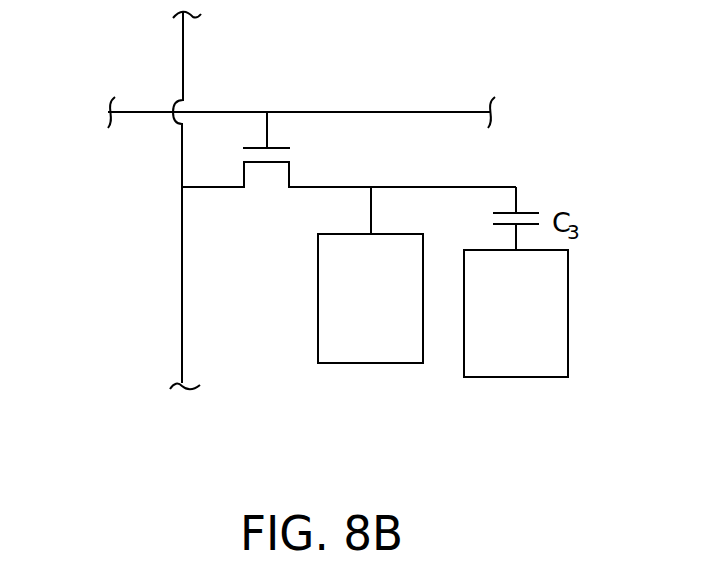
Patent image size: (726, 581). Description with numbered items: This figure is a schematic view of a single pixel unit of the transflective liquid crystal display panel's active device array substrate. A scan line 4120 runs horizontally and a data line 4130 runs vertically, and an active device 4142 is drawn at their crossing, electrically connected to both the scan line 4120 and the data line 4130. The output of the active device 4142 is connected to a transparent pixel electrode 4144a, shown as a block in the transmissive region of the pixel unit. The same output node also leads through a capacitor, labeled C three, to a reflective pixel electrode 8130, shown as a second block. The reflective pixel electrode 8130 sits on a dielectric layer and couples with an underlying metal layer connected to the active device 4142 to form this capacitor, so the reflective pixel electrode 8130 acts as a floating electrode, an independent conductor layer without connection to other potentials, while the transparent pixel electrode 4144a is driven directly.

The scan line 4120 is at (430, 112).
The data line 4130 is at (182, 254).
The active device 4142 is at (227, 154).
The transparent pixel electrode 4144a is at (369, 363).
The reflective pixel electrode 8130 is at (515, 377).